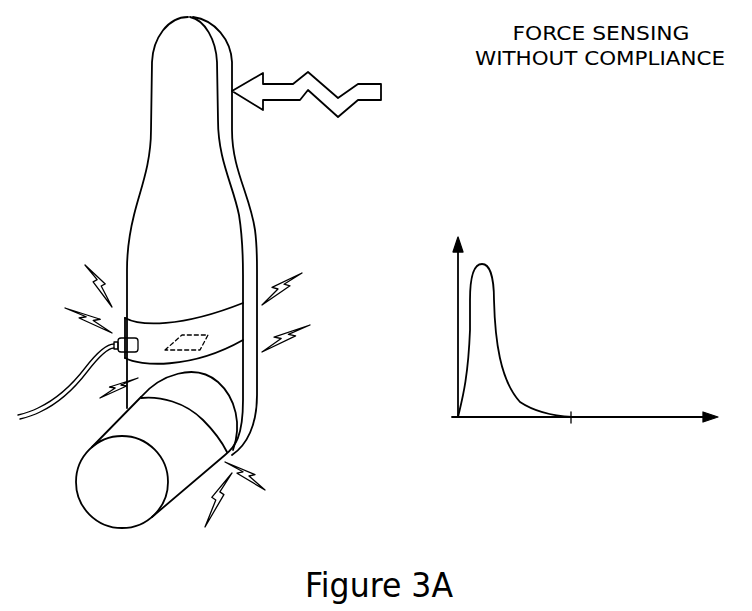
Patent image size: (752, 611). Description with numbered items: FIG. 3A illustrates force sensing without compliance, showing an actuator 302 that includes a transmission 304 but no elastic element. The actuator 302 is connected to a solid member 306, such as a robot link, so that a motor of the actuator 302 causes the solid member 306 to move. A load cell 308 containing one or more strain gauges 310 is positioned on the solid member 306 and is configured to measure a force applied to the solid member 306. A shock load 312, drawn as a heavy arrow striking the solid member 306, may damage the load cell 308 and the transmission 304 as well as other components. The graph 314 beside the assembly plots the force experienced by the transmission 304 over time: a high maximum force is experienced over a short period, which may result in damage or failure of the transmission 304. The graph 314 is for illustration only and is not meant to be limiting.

The actuator 302 is at (92, 492).
The transmission 304 is at (213, 443).
The solid member 306 is at (147, 157).
The load cell 308 is at (238, 337).
The strain gauge 310 is at (200, 341).
The shock load 312 is at (324, 94).
The graph 314 is at (686, 253).